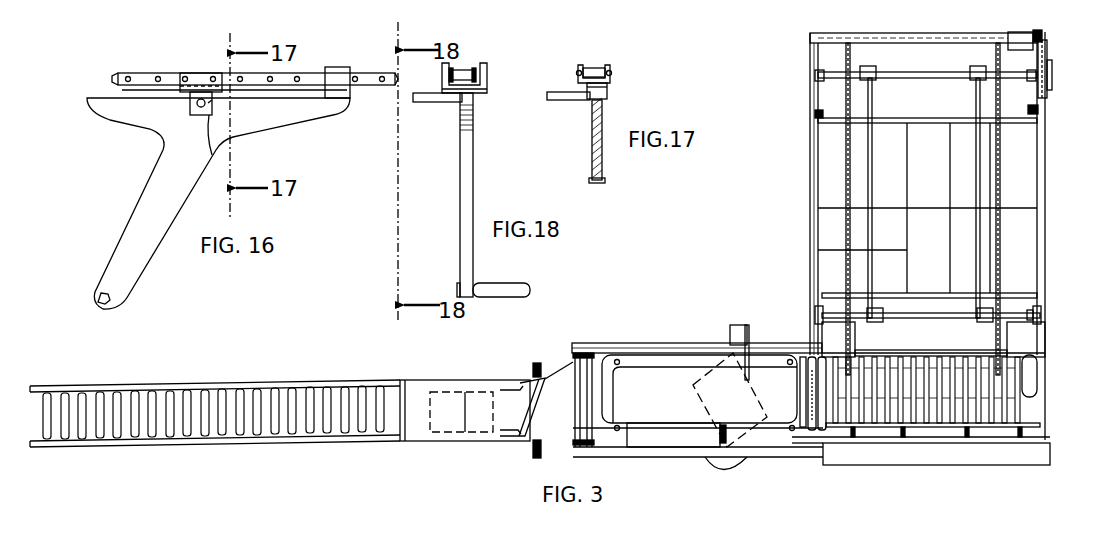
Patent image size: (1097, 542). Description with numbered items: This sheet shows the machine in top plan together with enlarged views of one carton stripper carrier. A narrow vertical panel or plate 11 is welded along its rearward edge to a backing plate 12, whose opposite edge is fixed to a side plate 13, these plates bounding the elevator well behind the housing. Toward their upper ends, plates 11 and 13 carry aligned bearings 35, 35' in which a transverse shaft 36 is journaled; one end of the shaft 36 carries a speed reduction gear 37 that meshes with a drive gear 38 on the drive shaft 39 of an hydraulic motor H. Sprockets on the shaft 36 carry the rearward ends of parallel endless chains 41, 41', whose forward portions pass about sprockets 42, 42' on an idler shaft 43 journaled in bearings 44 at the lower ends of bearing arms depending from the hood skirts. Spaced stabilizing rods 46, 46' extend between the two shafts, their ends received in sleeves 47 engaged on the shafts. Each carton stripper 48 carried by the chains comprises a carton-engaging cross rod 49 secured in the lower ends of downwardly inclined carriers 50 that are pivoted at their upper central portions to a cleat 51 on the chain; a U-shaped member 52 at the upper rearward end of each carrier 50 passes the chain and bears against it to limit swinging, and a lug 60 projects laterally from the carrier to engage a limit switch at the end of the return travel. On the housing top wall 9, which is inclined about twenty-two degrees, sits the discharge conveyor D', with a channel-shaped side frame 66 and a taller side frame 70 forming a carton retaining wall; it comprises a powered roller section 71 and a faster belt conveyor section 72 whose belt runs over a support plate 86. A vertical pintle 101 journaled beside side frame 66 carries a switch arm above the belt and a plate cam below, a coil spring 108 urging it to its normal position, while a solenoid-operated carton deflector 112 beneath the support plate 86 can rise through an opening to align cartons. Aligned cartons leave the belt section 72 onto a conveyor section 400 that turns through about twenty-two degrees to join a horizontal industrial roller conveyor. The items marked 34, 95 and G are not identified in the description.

In FIG. 3, the housing top wall 9 is at (925, 458).
In FIG. 3, the vertical panel or plate 11 is at (1040, 136).
In FIG. 3, the backing plate 12 is at (906, 33).
In FIG. 3, the side plate 13 is at (810, 97).
In FIG. 3, the stop block 34 is at (1040, 110).
In FIG. 3, the bearing 35 is at (1021, 67).
In FIG. 3, the bearing 35' is at (828, 67).
In FIG. 3, the shaft 36 is at (920, 72).
In FIG. 3, the speed reduction gear 37 is at (1052, 88).
In FIG. 3, the drive gear 38 is at (1047, 46).
In FIG. 3, the drive shaft 39 is at (1042, 32).
In FIG. 16, the endless chain 41 is at (255, 63).
In FIG. 18, the endless chain 41 is at (477, 58).
In FIG. 17, the endless chain 41 is at (594, 58).
In FIG. 3, the endless chain 41 is at (987, 209).
In FIG. 3, the endless chain 41' is at (812, 209).
In FIG. 3, the sprocket 42 is at (1044, 304).
In FIG. 3, the sprocket 42' is at (835, 331).
In FIG. 3, the idler shaft 43 is at (935, 318).
In FIG. 3, the bearing 44 is at (920, 350).
In FIG. 3, the stabilizing rod 46 is at (964, 198).
In FIG. 3, the stabilizing rod 46' is at (887, 198).
In FIG. 3, the sleeve 47 is at (868, 66).
In FIG. 16, the carton stripper 48 is at (155, 158).
In FIG. 18, the carton-engaging cross rod 49 is at (497, 283).
In FIG. 16, the carrier 50 is at (168, 225).
In FIG. 18, the carrier 50 is at (474, 186).
In FIG. 17, the carrier 50 is at (592, 150).
In FIG. 16, the cleat 51 is at (201, 73).
In FIG. 17, the cleat 51 is at (608, 90).
In FIG. 16, the U-shaped member 52 is at (340, 67).
In FIG. 18, the U-shaped member 52 is at (488, 76).
In FIG. 16, the lug 60 is at (212, 155).
In FIG. 18, the lug 60 is at (427, 102).
In FIG. 17, the lug 60 is at (572, 101).
In FIG. 3, the side frame 66 is at (638, 345).
In FIG. 3, the side frame 70 is at (678, 452).
In FIG. 3, the powered roller section 71 is at (1030, 380).
In FIG. 3, the belt conveyor section 72 is at (645, 430).
In FIG. 3, the support plate 86 is at (658, 362).
In FIG. 3, the roller bank 95 is at (1000, 423).
In FIG. 3, the pintle 101 is at (266, 447).
In FIG. 3, the coil spring 108 is at (755, 350).
In FIG. 3, the carton deflector 112 is at (730, 450).
In FIG. 3, the conveyor section 400 is at (548, 450).
In FIG. 3, the discharge conveyor D' is at (699, 469).
In FIG. 3, the gate G is at (918, 183).
In FIG. 3, the hydraulic motor H is at (1010, 32).